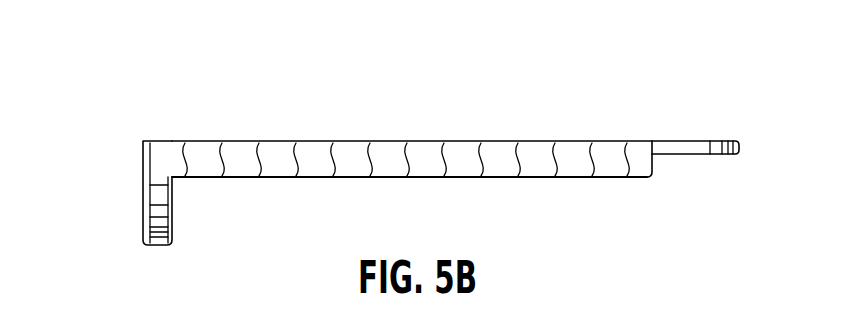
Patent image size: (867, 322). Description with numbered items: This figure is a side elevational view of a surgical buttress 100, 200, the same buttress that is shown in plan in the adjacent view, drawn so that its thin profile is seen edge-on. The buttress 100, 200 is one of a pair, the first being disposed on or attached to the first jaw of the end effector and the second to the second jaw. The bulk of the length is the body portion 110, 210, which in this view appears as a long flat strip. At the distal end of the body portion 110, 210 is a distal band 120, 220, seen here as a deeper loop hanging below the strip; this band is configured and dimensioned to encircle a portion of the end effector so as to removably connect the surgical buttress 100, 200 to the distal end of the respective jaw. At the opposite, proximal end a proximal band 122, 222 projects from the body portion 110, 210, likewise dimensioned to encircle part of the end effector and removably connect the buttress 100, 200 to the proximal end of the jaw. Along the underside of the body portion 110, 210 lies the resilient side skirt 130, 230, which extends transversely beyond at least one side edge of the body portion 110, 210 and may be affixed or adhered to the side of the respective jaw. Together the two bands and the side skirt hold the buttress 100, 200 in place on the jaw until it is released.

The first surgical buttress 100 is at (415, 140).
The second surgical buttress 200 is at (481, 70).
The body portion 110 is at (412, 117).
The body portion 210 is at (233, 140).
The distal band 120 is at (105, 204).
The distal band 220 is at (143, 215).
The proximal band 122 is at (722, 118).
The proximal band 222 is at (704, 141).
The resilient side skirt 130 is at (434, 211).
The resilient side skirt 230 is at (613, 178).